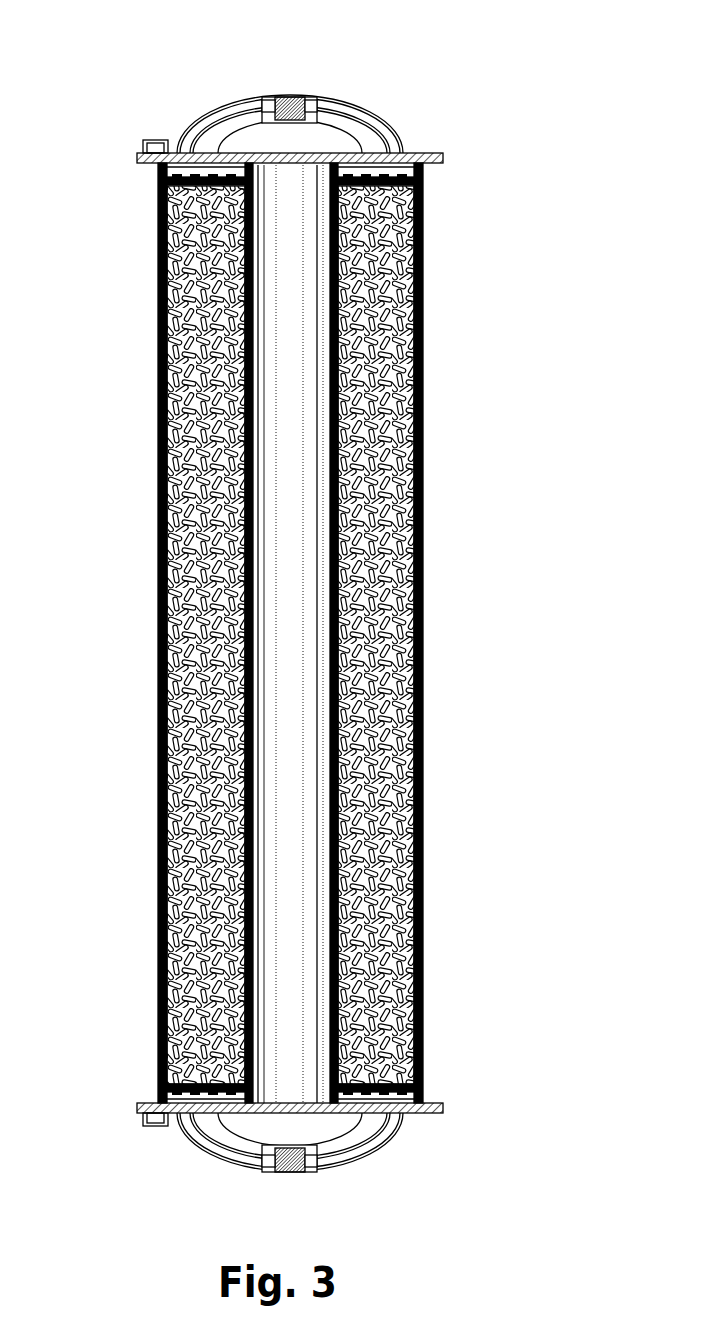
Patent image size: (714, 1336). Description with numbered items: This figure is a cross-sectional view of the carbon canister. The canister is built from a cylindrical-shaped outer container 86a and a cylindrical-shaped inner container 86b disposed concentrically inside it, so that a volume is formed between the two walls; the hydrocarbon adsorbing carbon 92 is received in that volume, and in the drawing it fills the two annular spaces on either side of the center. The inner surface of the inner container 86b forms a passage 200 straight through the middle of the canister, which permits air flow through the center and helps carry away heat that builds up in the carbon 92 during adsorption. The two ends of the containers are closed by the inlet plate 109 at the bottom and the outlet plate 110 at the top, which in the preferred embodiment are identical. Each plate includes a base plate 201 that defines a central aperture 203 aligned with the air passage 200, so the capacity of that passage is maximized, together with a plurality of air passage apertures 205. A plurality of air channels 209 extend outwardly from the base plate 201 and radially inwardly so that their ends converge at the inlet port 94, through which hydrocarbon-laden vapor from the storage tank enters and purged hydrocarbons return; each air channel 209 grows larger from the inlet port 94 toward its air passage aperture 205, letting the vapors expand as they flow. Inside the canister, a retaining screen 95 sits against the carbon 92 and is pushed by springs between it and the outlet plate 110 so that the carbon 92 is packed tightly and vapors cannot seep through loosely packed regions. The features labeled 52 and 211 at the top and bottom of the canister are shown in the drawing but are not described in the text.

The outlet plate 110 is at (158, 97).
The inlet plate 109 is at (425, 1174).
The hydrocarbon adsorbing carbon 92 is at (165, 416).
The air passage 200 is at (311, 185).
The outer container 86a is at (416, 820).
The inner container 86b is at (252, 786).
The retaining screen 95 is at (170, 181).
The base plate 201 is at (138, 158).
The central aperture 203 is at (268, 156).
The air passage apertures 205 is at (385, 150).
The air channels 209 is at (372, 125).
The nozzle block 211 is at (286, 97).
The inlet 52 is at (297, 84).
The inlet port 94 is at (313, 1184).